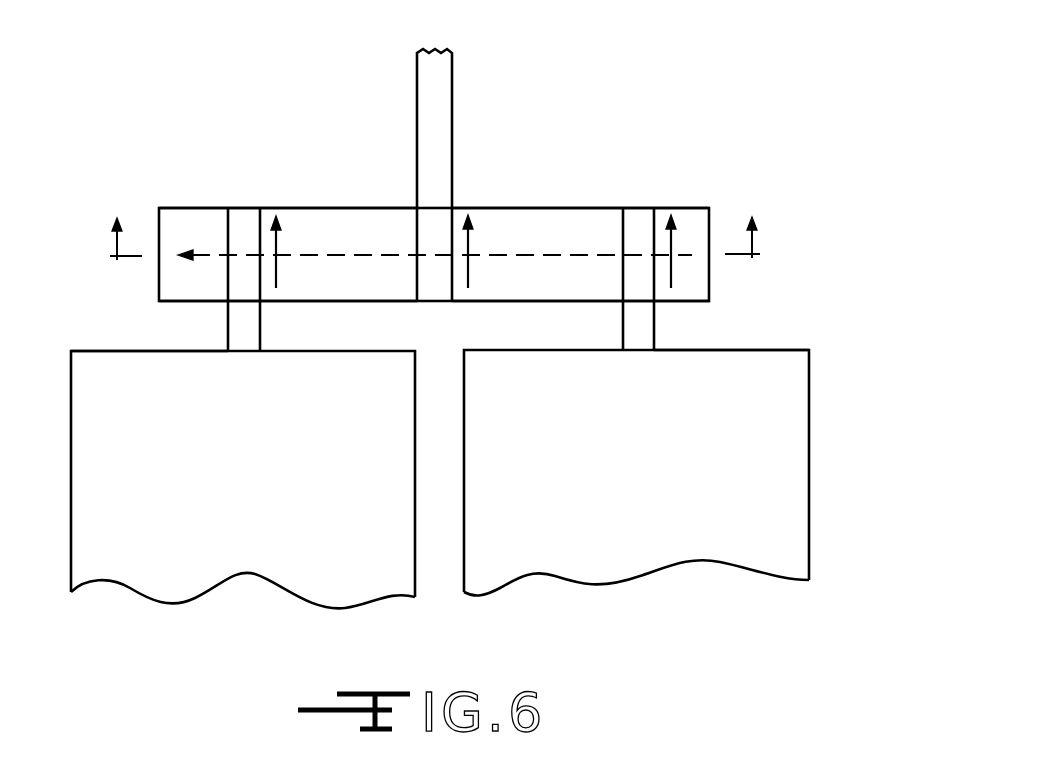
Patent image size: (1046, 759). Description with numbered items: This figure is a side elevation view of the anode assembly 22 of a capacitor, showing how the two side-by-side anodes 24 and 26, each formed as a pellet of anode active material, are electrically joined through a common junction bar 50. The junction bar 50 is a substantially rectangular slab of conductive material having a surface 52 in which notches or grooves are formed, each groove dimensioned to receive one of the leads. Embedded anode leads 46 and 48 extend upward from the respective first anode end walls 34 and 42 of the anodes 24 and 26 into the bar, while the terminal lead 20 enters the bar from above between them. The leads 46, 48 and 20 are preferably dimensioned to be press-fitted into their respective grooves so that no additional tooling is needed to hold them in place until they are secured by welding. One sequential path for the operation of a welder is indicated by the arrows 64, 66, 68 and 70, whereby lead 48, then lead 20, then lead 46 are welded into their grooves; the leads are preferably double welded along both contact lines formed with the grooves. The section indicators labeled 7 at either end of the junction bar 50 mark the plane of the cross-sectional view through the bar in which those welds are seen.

The section line 7- 7 is at (436, 252).
The terminal lead 20 is at (437, 99).
The anode assembly 22 is at (678, 98).
The anode 24 is at (120, 466).
The anode 26 is at (767, 442).
The first anode end wall 34 is at (108, 350).
The first anode end wall 42 is at (762, 348).
The anode lead 46 is at (248, 220).
The anode lead 48 is at (640, 213).
The junction bar 50 is at (337, 208).
The surface 52 is at (537, 222).
The arrow 64 is at (675, 241).
The arrow 66 is at (470, 243).
The arrow 68 is at (278, 245).
The arrow 70 is at (215, 247).